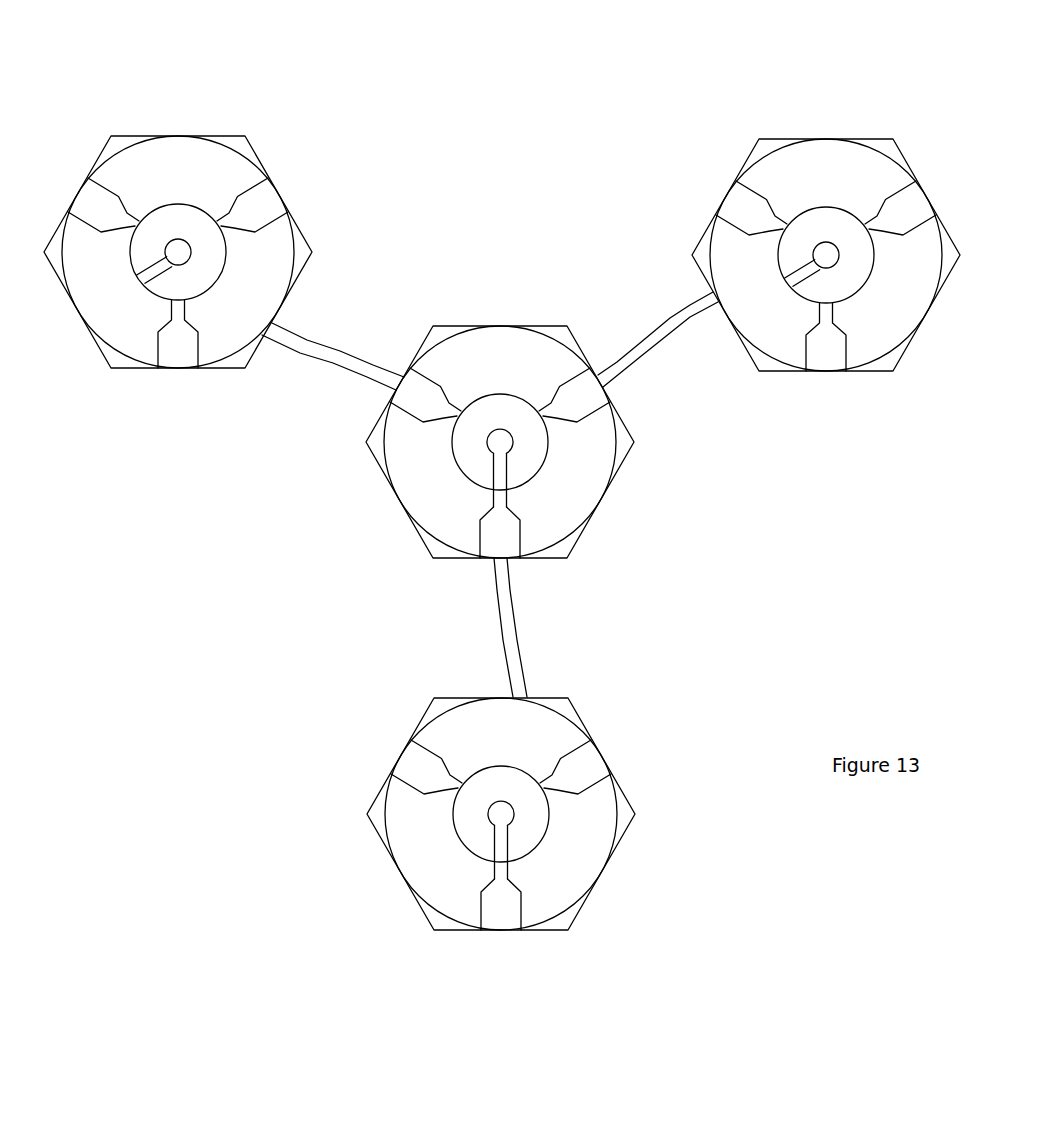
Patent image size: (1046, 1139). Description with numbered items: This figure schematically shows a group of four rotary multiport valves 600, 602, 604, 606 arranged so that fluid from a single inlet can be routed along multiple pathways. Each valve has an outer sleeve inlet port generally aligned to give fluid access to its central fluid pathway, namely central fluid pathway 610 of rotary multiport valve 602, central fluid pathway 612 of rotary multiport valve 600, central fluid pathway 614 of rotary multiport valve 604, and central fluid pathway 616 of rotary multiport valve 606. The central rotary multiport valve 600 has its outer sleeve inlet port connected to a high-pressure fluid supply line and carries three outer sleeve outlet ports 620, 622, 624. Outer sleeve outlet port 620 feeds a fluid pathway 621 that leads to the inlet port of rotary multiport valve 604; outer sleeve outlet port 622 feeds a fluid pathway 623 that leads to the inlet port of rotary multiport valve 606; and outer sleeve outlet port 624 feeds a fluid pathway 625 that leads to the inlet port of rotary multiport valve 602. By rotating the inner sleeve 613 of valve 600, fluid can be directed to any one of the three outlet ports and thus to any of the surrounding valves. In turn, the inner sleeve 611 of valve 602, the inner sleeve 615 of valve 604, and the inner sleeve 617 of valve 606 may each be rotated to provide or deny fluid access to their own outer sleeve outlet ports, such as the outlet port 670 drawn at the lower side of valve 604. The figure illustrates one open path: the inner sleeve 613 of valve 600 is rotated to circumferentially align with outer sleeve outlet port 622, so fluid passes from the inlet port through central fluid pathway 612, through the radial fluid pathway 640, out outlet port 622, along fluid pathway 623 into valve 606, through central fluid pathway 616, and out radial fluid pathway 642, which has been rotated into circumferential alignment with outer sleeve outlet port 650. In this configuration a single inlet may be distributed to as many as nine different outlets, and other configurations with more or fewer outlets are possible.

The rotary multiport valve 600 is at (455, 263).
The rotary multiport valve 602 is at (132, 75).
The rotary multiport valve 604 is at (782, 73).
The rotary multiport valve 606 is at (325, 753).
The central fluid pathway 610 is at (182, 249).
The inner sleeve 611 is at (202, 227).
The central fluid pathway 612 is at (505, 437).
The inner sleeve 613 is at (522, 417).
The central fluid pathway 614 is at (827, 252).
The inner sleeve 615 is at (847, 230).
The central fluid pathway 616 is at (498, 818).
The inner sleeve 617 is at (522, 788).
The outer sleeve outlet port 620 is at (583, 398).
The fluid pathway 621 is at (678, 318).
The outer sleeve outlet port 622 is at (497, 543).
The fluid pathway 623 is at (508, 598).
The outer sleeve outlet port 624 is at (418, 393).
The fluid pathway 625 is at (310, 353).
The radial fluid pathway 640 is at (497, 475).
The radial fluid pathway 642 is at (500, 847).
The outer sleeve outlet port 650 is at (503, 908).
The tab pad 670 is at (828, 353).